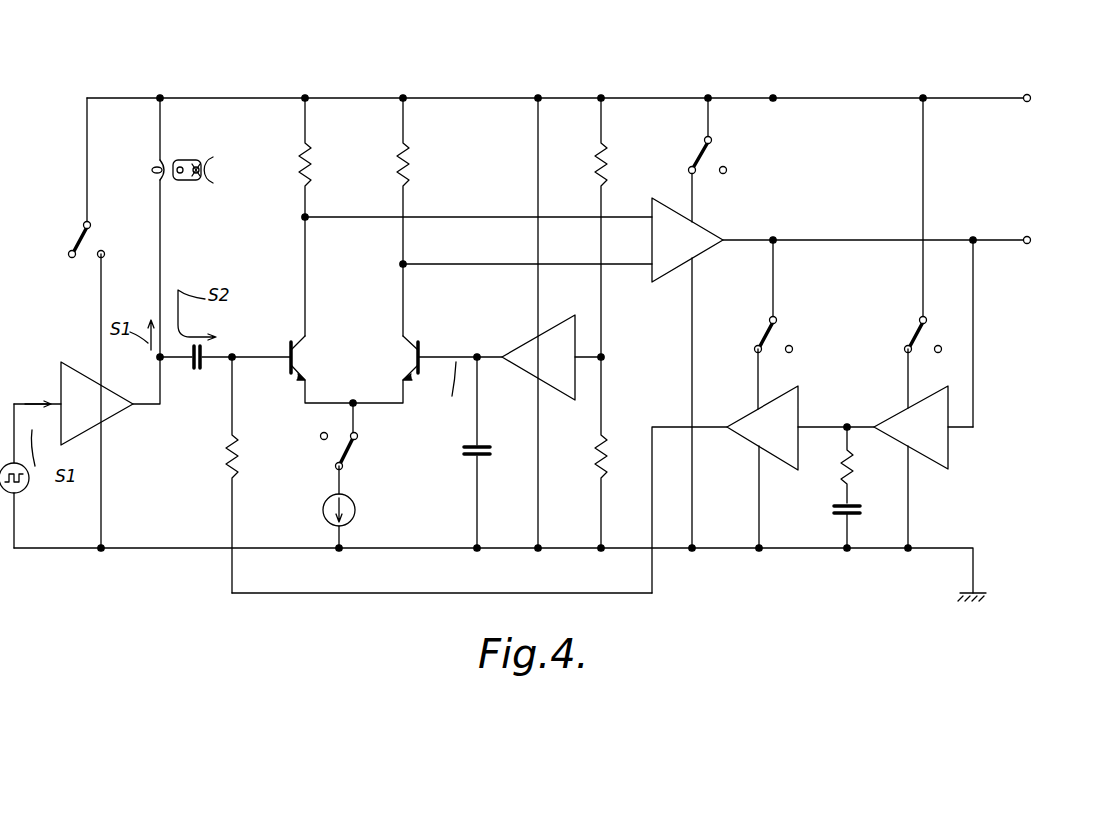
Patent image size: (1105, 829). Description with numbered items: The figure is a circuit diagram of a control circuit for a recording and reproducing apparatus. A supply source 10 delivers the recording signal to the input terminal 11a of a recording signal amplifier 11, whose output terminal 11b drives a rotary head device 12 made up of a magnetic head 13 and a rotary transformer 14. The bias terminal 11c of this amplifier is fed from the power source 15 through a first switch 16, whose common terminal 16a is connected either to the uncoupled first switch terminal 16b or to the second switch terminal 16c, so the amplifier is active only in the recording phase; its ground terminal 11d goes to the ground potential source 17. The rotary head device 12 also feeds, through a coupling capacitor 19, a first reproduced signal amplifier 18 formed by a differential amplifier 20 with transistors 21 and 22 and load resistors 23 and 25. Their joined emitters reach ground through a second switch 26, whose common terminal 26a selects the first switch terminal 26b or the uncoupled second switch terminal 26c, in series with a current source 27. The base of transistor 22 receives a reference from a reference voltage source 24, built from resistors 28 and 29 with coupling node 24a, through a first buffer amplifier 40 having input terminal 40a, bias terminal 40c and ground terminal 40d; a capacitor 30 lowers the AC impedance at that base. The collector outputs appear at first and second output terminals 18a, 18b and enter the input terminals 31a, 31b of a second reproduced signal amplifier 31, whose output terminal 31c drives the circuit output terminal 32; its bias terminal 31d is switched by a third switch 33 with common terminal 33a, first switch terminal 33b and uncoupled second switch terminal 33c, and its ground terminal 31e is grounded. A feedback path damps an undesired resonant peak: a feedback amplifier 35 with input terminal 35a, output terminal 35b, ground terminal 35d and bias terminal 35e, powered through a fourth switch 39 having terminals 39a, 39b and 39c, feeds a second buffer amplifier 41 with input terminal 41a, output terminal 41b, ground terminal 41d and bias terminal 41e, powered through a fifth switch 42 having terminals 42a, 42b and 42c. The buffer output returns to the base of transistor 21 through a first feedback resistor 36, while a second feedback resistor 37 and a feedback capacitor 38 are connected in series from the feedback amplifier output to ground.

The supply source of a recording signal 10 is at (28, 487).
The recording signal amplifier 11 is at (96, 418).
The input terminal 11a is at (58, 398).
The output terminal 11b is at (135, 406).
The bias terminal 11c is at (103, 383).
The ground terminal 11d is at (103, 432).
The rotary head device 12 is at (185, 158).
The magnetic head 13 is at (214, 170).
The rotary transformer 14 is at (170, 182).
The power source 15 is at (1023, 104).
The first switch 16 is at (78, 236).
The common terminal 16a is at (89, 222).
The first switch terminal 16b is at (70, 257).
The second switch terminal 16c is at (103, 258).
The ground potential source 17 is at (958, 598).
The first reproduced signal amplifier 18 is at (303, 277).
The first output terminal 18a is at (308, 220).
The second output terminal 18b is at (406, 262).
The coupling capacitor 19 is at (197, 372).
The differential amplifier 20 is at (354, 359).
The transistor 21 is at (289, 346).
The transistor 22 is at (421, 350).
The load resistor 23 is at (340, 160).
The reference voltage source 24 is at (610, 345).
The coupling node 24a is at (605, 360).
The load resistor 25 is at (438, 160).
The second switch 26 is at (335, 449).
The common terminal 26a is at (343, 466).
The first switch terminal 26b is at (358, 436).
The second switch terminal 26c is at (321, 434).
The current source 27 is at (357, 509).
The resistor 28 is at (598, 168).
The resistor 29 is at (481, 456).
The capacitor 30 is at (598, 460).
The second reproduced signal amplifier 31 is at (817, 359).
The input terminal 31a is at (650, 216).
The input terminal 31b is at (650, 263).
The output terminal 31c is at (722, 245).
The bias terminal 31d is at (695, 218).
The ground terminal 31e is at (678, 270).
The output terminal 32 is at (1025, 237).
The third switch 33 is at (700, 147).
The common terminal 33a is at (711, 140).
The first switch terminal 33b is at (690, 168).
The second switch terminal 33c is at (727, 170).
The feedback amplifier 35 is at (952, 462).
The input terminal 35a is at (952, 430).
The output terminal 35b is at (875, 430).
The ground terminal 35d is at (911, 455).
The bias terminal 35e is at (905, 410).
The first feedback resistor 36 is at (230, 463).
The second feedback resistor 37 is at (851, 470).
The feedback capacitor 38 is at (843, 511).
The fourth switch 39 is at (915, 337).
The common terminal 39a is at (926, 320).
The first switch terminal 39b is at (905, 349).
The second switch terminal 39c is at (942, 349).
The first buffer amplifier 40 is at (540, 357).
The input terminal 40a is at (578, 355).
The bias terminal 40c is at (545, 340).
The ground terminal 40d is at (545, 383).
The second buffer amplifier 41 is at (814, 447).
The input terminal 41a is at (801, 424).
The output terminal 41b is at (731, 430).
The ground terminal 41d is at (761, 453).
The bias terminal 41e is at (755, 400).
The fifth switch 42 is at (765, 337).
The common terminal 42a is at (776, 320).
The first switch terminal 42b is at (755, 349).
The second switch terminal 42c is at (792, 349).